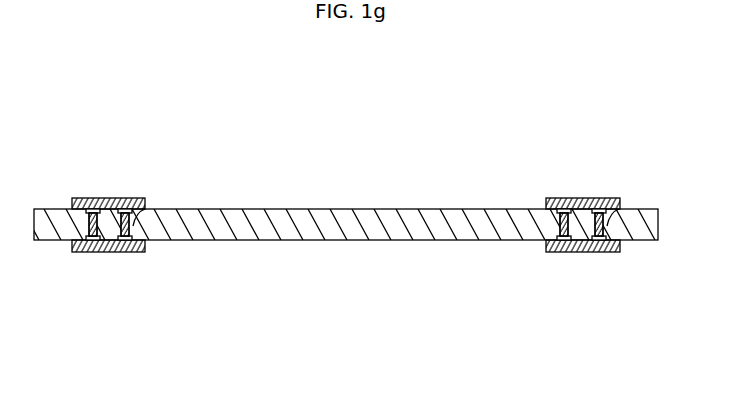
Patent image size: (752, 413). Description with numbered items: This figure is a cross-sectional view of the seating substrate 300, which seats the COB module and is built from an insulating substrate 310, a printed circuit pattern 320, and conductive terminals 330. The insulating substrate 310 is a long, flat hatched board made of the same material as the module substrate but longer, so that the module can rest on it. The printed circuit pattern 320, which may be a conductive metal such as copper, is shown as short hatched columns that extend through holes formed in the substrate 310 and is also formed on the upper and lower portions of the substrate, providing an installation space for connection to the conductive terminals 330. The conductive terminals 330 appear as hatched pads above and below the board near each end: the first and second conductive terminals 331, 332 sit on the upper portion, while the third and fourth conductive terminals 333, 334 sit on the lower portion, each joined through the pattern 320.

The seating substrate 300 is at (86, 99).
The insulating substrate 310 is at (329, 222).
The printed circuit pattern 320 is at (138, 252).
The conductive terminals 330 is at (615, 228).
The first conductive terminal 331 is at (112, 198).
The second conductive terminal 332 is at (585, 197).
The third conductive terminal 333 is at (86, 252).
The fourth conductive terminal 334 is at (560, 252).